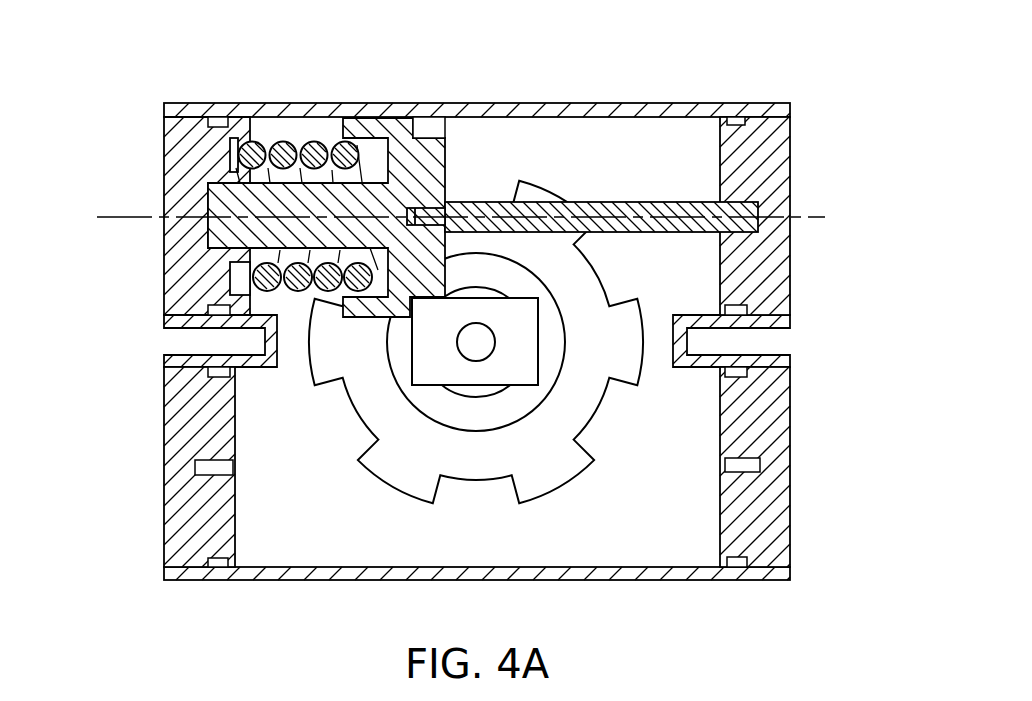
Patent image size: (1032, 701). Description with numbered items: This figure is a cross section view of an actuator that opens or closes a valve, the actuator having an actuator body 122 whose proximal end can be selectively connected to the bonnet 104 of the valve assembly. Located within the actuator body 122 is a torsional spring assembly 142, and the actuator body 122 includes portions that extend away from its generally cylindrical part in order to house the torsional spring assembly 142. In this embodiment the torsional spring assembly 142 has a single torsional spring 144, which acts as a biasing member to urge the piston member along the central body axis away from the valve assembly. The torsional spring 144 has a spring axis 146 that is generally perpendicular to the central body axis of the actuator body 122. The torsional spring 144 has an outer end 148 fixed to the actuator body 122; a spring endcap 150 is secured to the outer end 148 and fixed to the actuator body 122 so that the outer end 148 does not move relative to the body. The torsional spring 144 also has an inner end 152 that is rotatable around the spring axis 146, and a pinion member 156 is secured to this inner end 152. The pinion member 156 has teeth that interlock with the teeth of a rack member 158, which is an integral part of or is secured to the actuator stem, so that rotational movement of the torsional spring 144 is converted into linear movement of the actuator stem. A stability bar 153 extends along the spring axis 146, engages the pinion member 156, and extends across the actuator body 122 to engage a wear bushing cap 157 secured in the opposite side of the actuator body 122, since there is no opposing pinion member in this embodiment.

The bonnet 104 is at (550, 468).
The actuator body 122 is at (687, 110).
The torsional spring assembly 142 is at (293, 66).
The torsional spring 144 is at (253, 278).
The spring axis 146 is at (130, 215).
The outer end 148 is at (237, 126).
The spring endcap 150 is at (187, 267).
The inner end 152 is at (380, 143).
The stability bar 153 is at (688, 200).
The pinion member 156 is at (440, 170).
The wear bushing cap 157 is at (767, 415).
The rack member 158 is at (438, 358).